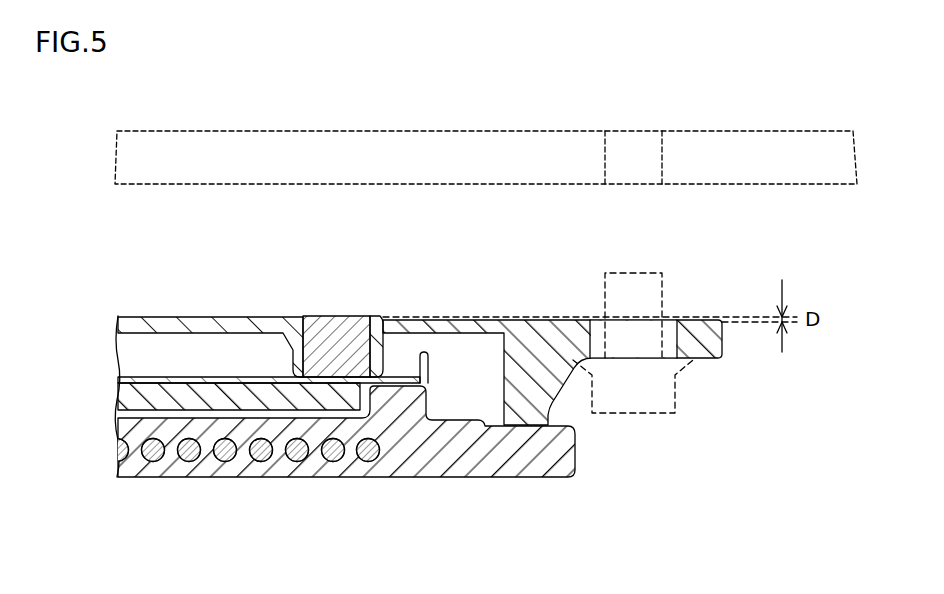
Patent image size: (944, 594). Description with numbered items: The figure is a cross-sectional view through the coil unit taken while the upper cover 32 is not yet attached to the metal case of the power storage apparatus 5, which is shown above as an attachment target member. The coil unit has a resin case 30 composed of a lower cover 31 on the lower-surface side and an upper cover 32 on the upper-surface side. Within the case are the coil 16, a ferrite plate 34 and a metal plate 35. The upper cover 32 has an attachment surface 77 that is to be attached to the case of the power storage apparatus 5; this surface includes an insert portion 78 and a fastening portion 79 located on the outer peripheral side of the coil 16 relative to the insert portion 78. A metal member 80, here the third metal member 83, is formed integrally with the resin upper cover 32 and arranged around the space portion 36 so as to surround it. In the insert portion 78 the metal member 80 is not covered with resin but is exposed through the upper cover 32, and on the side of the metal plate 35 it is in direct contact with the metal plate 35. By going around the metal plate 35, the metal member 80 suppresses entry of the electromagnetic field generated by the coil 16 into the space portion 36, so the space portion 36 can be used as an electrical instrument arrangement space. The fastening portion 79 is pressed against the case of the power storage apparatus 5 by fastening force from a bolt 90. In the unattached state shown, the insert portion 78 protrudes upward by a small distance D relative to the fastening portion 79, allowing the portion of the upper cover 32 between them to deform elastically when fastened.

The power storage apparatus 5 is at (267, 165).
The coil 16 is at (224, 458).
The case 30 is at (414, 424).
The lower cover 31 is at (341, 457).
The upper cover 32 is at (552, 408).
The ferrite plate 34 is at (120, 398).
The metal plate 35 is at (198, 383).
The space portion 36 is at (128, 360).
The attachment surface 77 is at (143, 320).
The insert portion 78 is at (381, 318).
The fastening portion 79 is at (707, 320).
The metal member 80 is at (333, 294).
The third metal member 83 is at (335, 343).
The bolt 90 is at (676, 397).